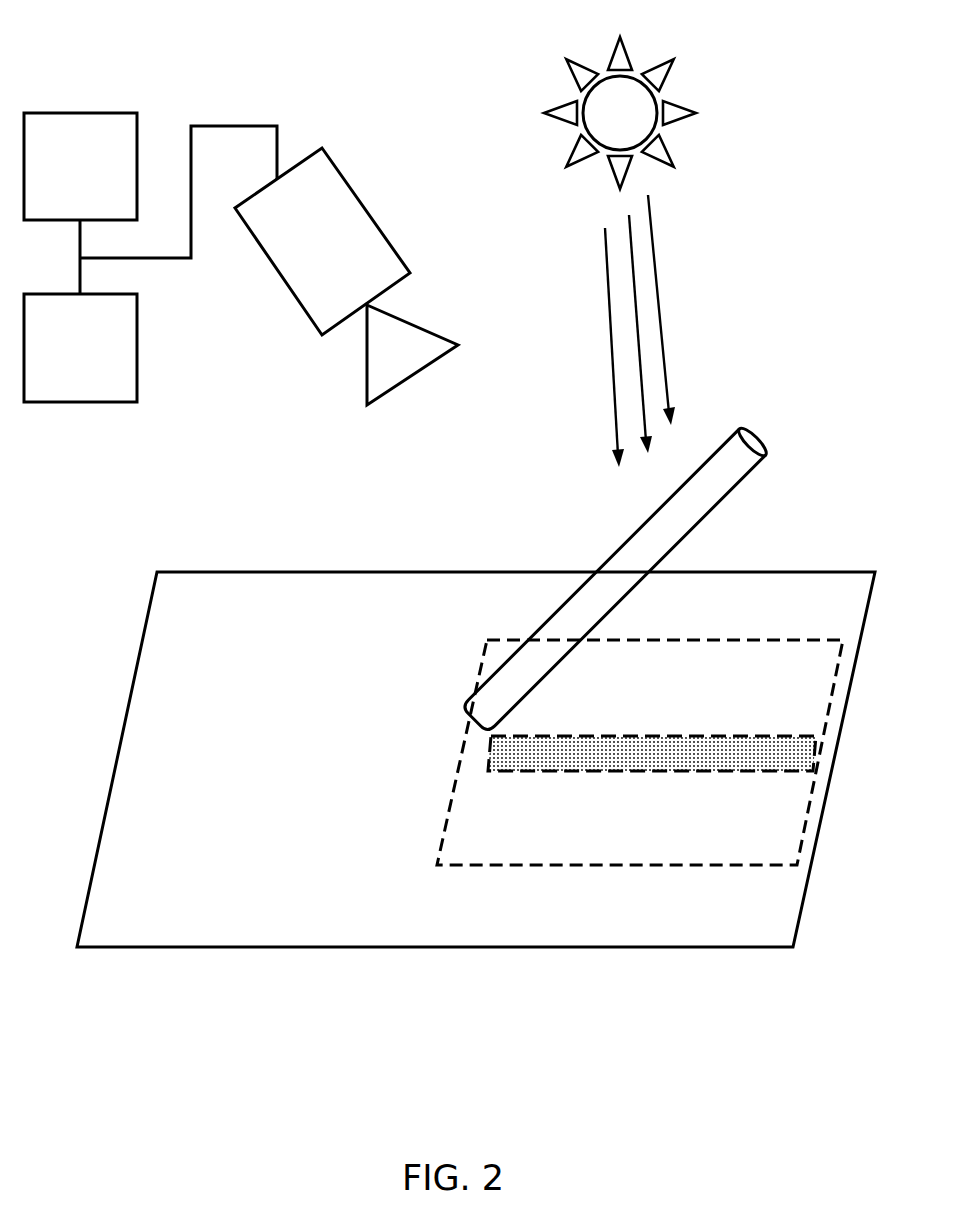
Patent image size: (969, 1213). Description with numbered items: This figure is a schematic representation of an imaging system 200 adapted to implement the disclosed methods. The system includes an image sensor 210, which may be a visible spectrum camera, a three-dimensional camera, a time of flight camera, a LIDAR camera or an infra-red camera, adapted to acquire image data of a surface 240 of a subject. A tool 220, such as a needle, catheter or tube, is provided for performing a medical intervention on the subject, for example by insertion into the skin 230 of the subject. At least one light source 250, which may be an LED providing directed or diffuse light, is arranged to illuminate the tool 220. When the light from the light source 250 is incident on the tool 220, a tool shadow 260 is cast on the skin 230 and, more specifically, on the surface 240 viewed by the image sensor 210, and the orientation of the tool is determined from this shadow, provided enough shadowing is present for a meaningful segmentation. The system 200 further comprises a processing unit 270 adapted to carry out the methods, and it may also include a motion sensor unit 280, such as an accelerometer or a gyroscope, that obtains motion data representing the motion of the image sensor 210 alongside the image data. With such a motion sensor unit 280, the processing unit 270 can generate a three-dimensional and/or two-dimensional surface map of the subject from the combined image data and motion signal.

The imaging system 200 is at (158, 1110).
The image sensor 210 is at (337, 167).
The tool 220 is at (754, 436).
The skin 230 is at (551, 949).
The surface 240 is at (722, 639).
The light source 250 is at (673, 88).
The tool shadow 260 is at (692, 737).
The processing unit 270 is at (108, 112).
The motion sensor unit 280 is at (137, 361).